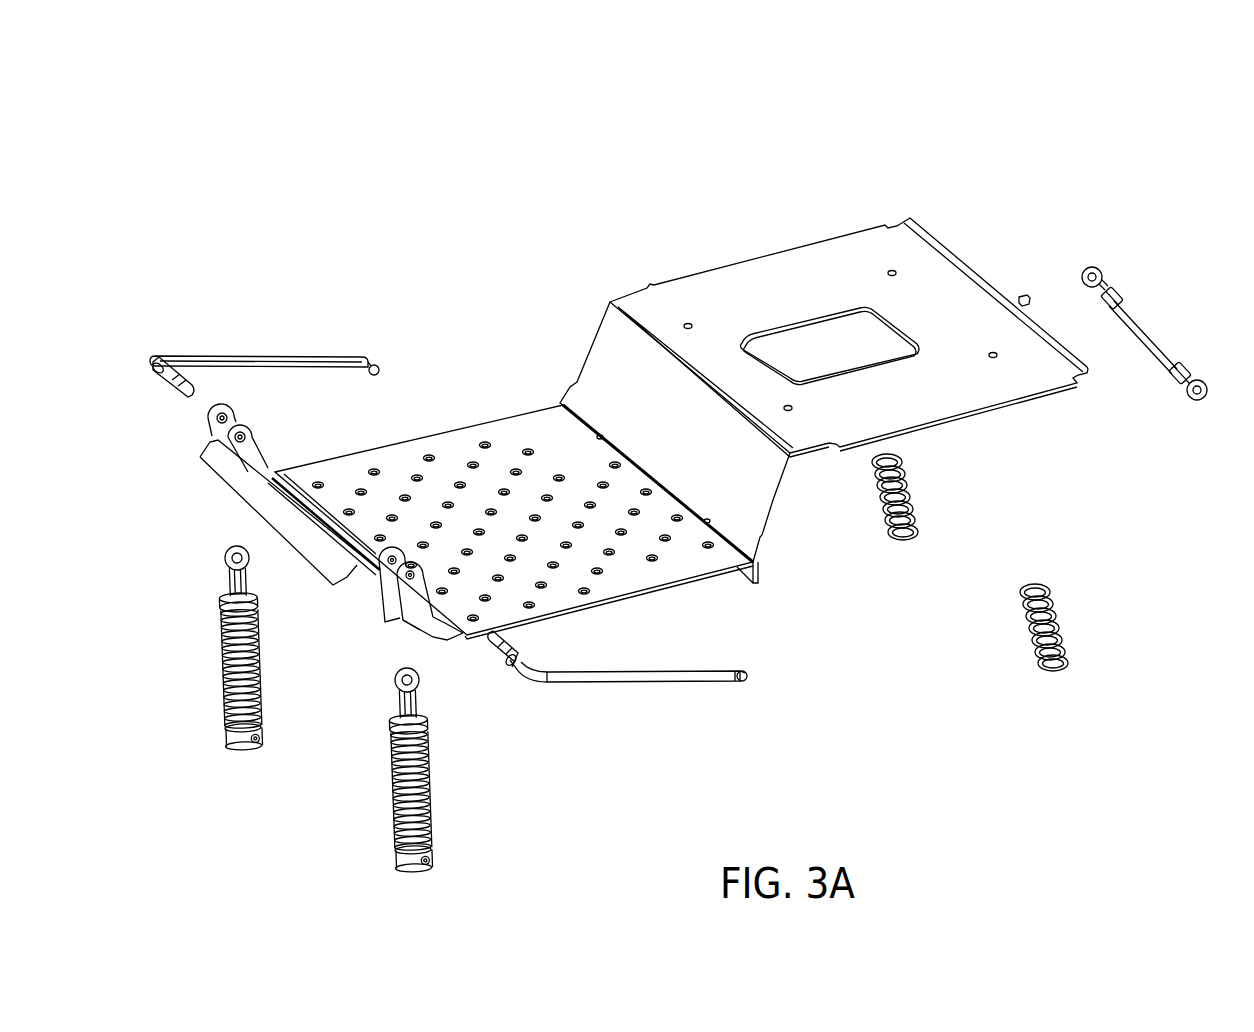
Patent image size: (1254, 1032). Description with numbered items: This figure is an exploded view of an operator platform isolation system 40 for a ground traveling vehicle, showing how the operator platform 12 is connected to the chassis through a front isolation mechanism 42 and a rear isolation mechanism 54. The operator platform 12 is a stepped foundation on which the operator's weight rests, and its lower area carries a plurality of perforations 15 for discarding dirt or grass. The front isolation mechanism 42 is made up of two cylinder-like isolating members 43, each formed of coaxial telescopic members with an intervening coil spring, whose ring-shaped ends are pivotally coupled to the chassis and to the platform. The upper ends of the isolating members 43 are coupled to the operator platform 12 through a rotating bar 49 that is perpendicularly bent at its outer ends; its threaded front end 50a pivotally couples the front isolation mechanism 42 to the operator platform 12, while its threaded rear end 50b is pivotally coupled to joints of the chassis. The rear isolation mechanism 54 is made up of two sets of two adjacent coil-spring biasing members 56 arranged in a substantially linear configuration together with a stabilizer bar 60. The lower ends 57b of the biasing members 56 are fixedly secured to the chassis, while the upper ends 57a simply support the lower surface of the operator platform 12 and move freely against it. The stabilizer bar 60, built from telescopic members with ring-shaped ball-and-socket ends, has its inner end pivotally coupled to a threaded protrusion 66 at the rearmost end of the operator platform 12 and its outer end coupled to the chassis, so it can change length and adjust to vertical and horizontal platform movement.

The operator platform isolation system 40 is at (661, 457).
The front isolation mechanism 42 is at (648, 537).
The operator platform 12 is at (642, 307).
The perforations 15 is at (528, 450).
The isolating member 43 is at (273, 708).
The rotating bar 49 is at (433, 519).
The front end 50a is at (160, 377).
The rear end 50b is at (372, 363).
The rear isolation mechanism 54 is at (1028, 570).
The biasing member 56 is at (948, 570).
The upper end 57a is at (920, 472).
The lower end 57b is at (920, 537).
The stabilizer bar 60 is at (1143, 330).
The threaded protrusion 66 is at (1022, 295).